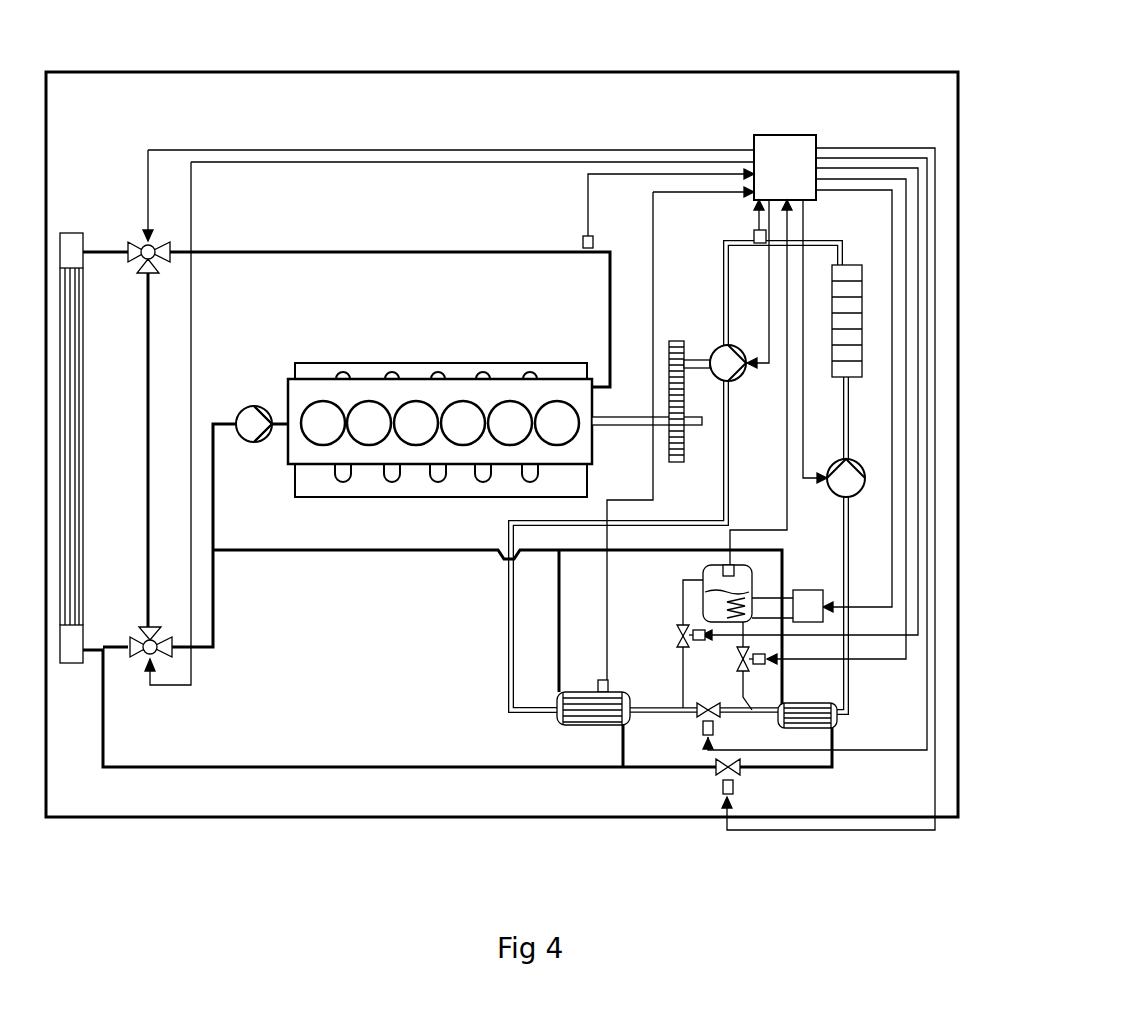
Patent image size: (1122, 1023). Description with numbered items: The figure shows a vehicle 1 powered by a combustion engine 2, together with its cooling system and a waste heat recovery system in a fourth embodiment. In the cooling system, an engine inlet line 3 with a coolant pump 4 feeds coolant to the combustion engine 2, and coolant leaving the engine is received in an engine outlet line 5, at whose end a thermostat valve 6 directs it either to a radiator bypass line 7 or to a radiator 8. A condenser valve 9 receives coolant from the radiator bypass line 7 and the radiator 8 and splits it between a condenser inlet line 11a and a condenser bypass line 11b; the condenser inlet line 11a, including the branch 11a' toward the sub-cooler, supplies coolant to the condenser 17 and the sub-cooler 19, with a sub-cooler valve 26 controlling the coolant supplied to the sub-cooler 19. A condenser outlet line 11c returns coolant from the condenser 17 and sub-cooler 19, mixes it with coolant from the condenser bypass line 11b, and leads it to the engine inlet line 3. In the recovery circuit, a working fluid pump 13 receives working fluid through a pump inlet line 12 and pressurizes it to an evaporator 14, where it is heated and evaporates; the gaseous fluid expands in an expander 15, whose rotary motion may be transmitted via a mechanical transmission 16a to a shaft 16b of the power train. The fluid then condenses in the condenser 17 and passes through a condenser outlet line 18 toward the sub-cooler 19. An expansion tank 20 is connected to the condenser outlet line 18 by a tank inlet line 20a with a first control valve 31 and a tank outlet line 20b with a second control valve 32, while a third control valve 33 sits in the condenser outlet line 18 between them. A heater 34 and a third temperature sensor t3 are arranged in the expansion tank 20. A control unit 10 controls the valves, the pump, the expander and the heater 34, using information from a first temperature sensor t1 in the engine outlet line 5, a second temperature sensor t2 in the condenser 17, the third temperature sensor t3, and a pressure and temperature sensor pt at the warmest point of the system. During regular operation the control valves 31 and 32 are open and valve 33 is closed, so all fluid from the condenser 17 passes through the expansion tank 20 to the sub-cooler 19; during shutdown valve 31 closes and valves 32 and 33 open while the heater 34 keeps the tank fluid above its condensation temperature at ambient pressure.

The vehicle 1 is at (100, 105).
The combustion engine 2 is at (470, 370).
The engine inlet line 3 is at (232, 423).
The coolant pump 4 is at (255, 420).
The engine outlet line 5 is at (605, 330).
The thermostat valve 6 is at (142, 246).
The radiator bypass line 7 is at (145, 320).
The radiator 8 is at (80, 410).
The condenser valve 9 is at (143, 640).
The control unit 10 is at (808, 148).
The condenser inlet line 11a is at (399, 707).
The coolant pipe branch 11a' is at (787, 769).
The condenser bypass line 11b is at (216, 625).
The condenser outlet line 11c is at (455, 551).
The pump inlet line 12 is at (844, 563).
The working fluid pump 13 is at (840, 484).
The evaporator 14 is at (848, 272).
The expander 15 is at (732, 372).
The mechanical transmission 16a is at (676, 358).
The shaft 16b is at (620, 430).
The condenser 17 is at (590, 712).
The condenser outlet line 18 is at (657, 722).
The sub-cooler 19 is at (825, 712).
The expansion tank 20 is at (718, 583).
The tank inlet line 20a is at (683, 698).
The tank outlet line 20b is at (743, 702).
The sub-cooler valve 26 is at (722, 772).
The first control valve 31 is at (677, 636).
The second control valve 32 is at (737, 659).
The third control valve 33 is at (702, 737).
The heater 34 is at (703, 610).
The first temperature sensor t1 is at (585, 237).
The second temperature sensor t2 is at (601, 683).
The third temperature sensor t3 is at (735, 572).
The pressure and temperature sensor pt is at (752, 234).